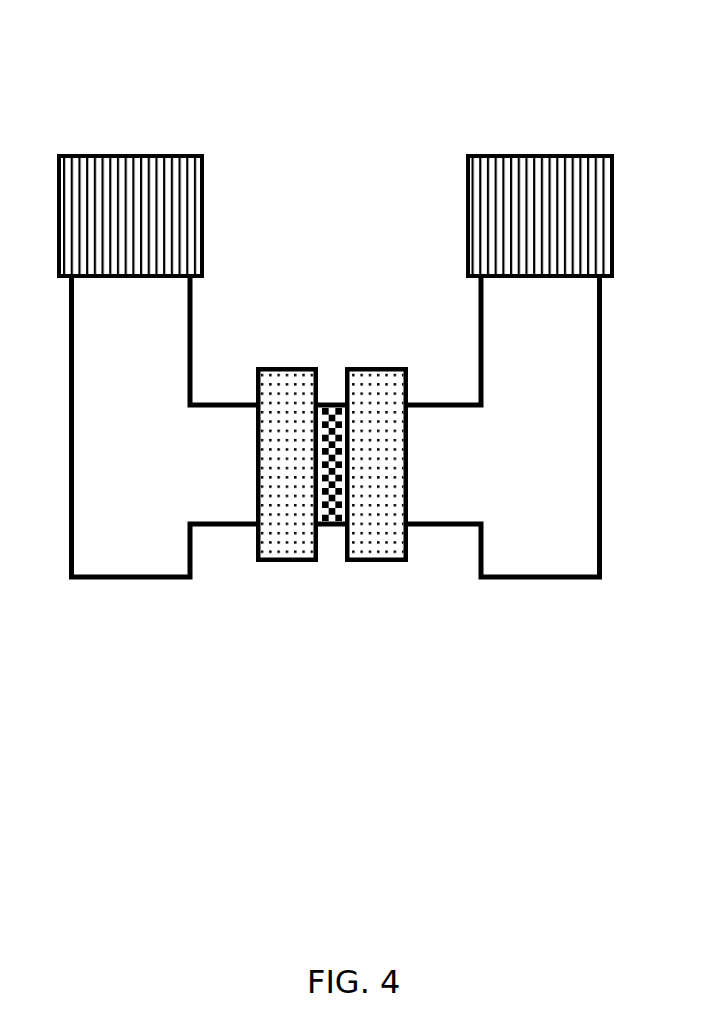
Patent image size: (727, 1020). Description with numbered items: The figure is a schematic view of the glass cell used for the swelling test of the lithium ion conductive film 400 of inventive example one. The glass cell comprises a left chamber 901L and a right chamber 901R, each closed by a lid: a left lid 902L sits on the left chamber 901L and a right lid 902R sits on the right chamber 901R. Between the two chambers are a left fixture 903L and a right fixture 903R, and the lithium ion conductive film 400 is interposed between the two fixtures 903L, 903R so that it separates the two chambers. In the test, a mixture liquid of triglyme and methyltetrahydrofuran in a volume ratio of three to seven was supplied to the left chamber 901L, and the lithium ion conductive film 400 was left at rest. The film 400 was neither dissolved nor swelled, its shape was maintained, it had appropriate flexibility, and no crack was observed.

The lithium ion conductive film 400 is at (333, 404).
The left chamber 901L is at (113, 520).
The right chamber 901R is at (540, 523).
The left lid 902L is at (96, 192).
The right lid 902R is at (518, 167).
The left fixture 903L is at (282, 550).
The right fixture 903R is at (385, 538).